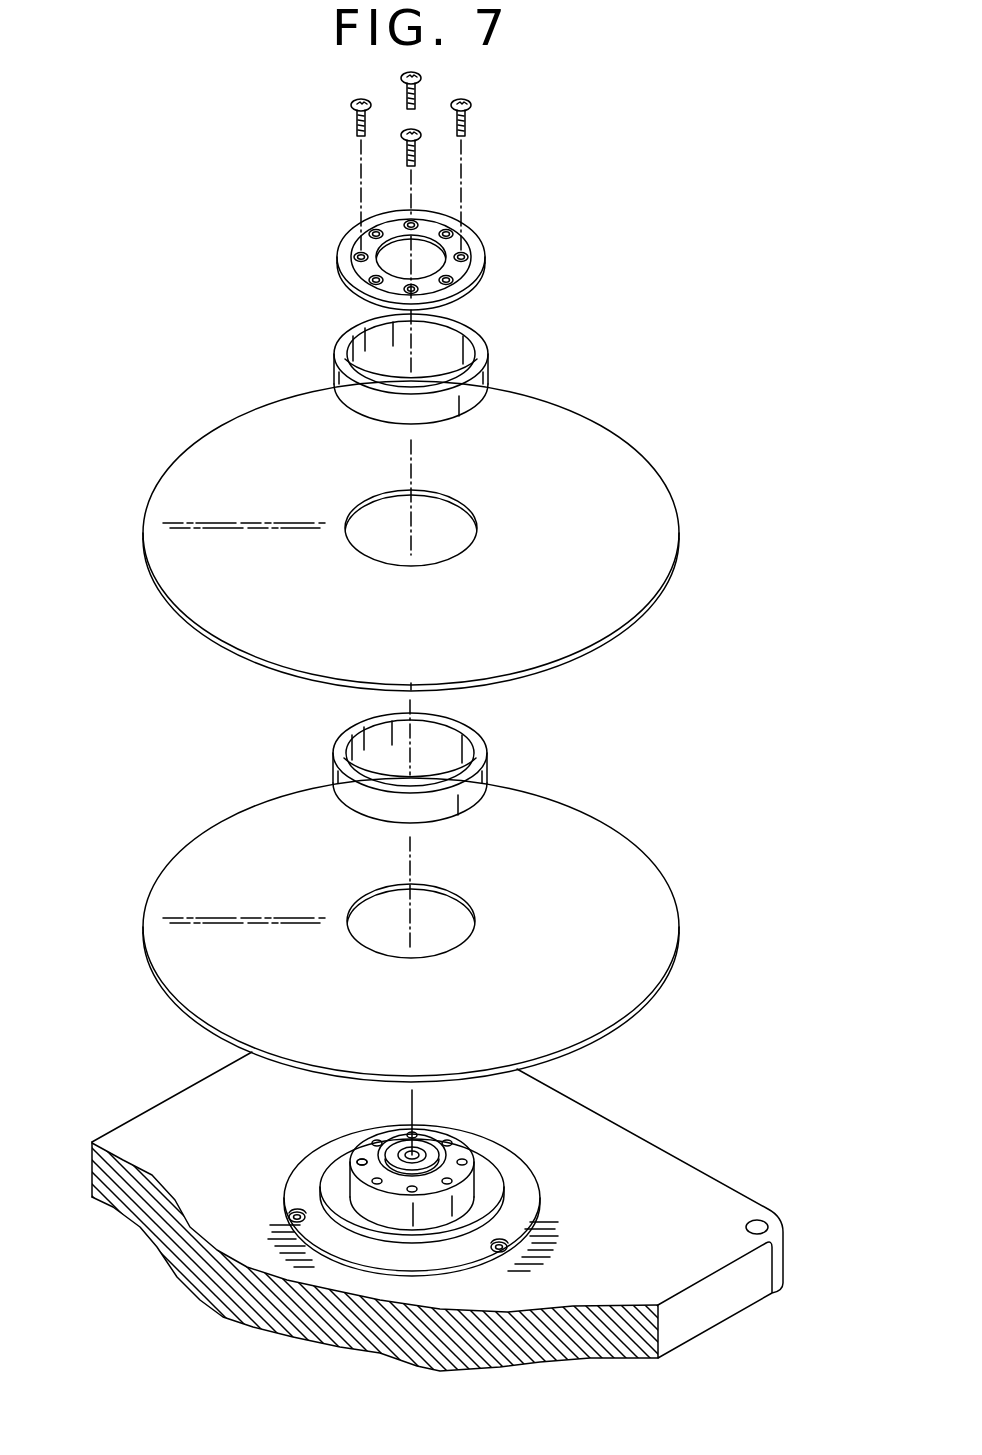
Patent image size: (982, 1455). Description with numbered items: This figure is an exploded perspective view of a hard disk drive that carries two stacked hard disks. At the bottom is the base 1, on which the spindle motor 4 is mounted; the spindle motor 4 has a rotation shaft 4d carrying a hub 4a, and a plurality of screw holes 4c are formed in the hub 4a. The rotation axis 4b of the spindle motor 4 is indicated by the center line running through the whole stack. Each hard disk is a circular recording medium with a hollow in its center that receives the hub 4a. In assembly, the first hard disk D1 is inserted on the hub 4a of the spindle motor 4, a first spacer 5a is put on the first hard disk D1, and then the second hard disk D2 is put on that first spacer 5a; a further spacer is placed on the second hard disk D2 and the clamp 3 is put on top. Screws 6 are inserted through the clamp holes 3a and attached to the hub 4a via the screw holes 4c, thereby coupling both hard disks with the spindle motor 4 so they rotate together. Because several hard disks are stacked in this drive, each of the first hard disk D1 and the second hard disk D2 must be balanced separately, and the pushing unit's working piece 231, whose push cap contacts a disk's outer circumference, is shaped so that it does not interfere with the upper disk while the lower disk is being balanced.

The screws 6 is at (471, 109).
The clamp 3 is at (333, 245).
The clamp holes 3a is at (484, 238).
The first spacer 5a is at (491, 372).
The second hard disk D2 is at (610, 438).
The first hard disk D1 is at (598, 833).
The working piece 231 is at (422, 904).
The base 1 is at (718, 1190).
The spindle motor 4 is at (481, 1147).
The hub 4a is at (463, 1175).
The rotation axis 4b is at (413, 1104).
The screw holes 4c is at (358, 1160).
The rotation shaft 4d is at (392, 1142).